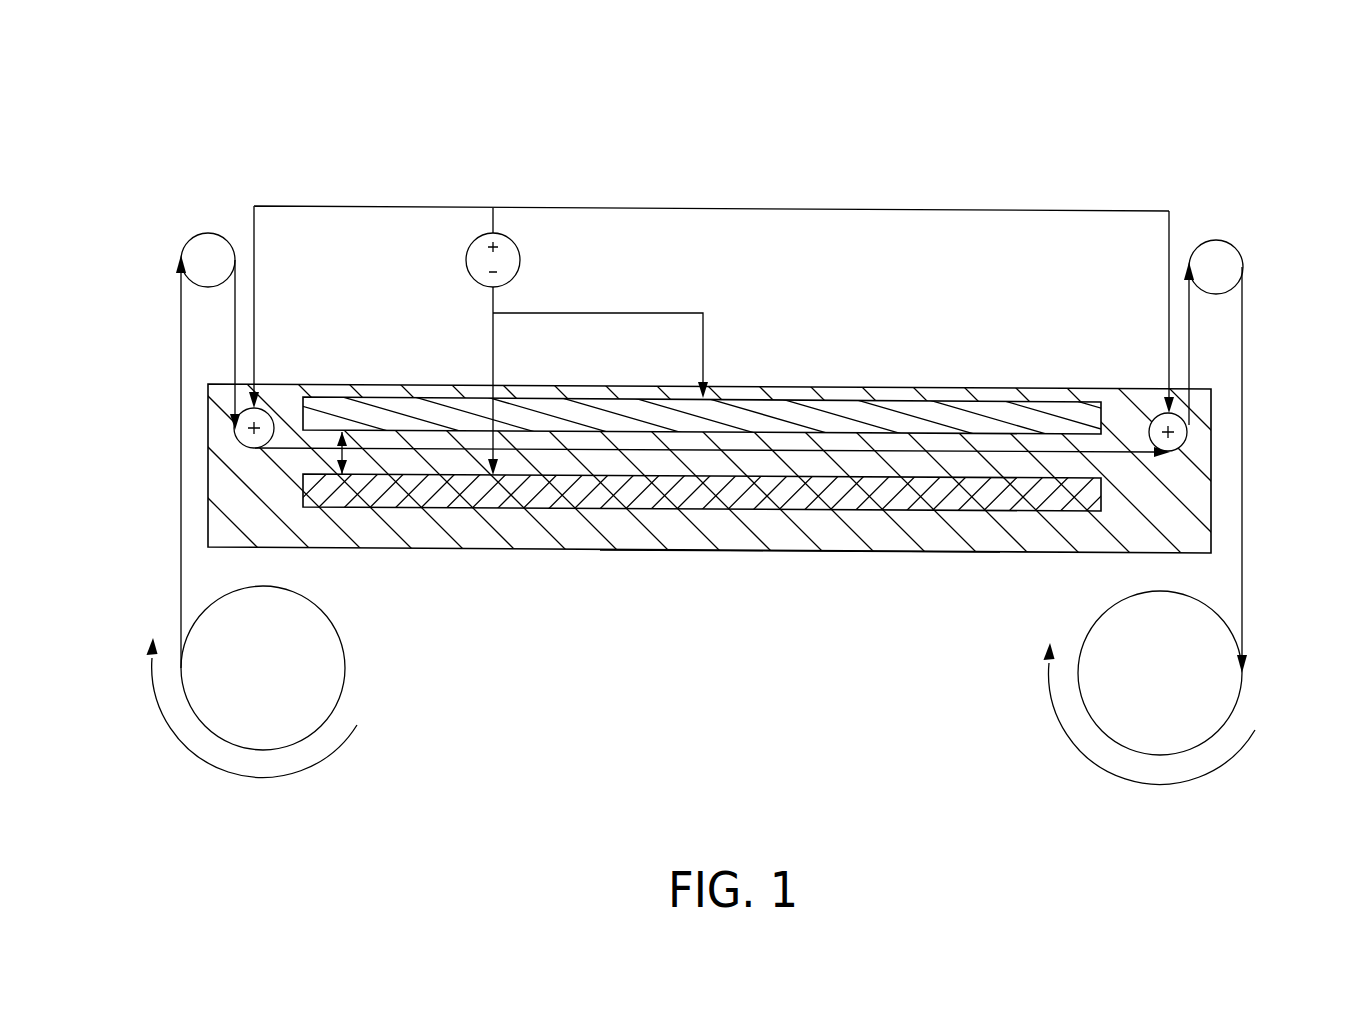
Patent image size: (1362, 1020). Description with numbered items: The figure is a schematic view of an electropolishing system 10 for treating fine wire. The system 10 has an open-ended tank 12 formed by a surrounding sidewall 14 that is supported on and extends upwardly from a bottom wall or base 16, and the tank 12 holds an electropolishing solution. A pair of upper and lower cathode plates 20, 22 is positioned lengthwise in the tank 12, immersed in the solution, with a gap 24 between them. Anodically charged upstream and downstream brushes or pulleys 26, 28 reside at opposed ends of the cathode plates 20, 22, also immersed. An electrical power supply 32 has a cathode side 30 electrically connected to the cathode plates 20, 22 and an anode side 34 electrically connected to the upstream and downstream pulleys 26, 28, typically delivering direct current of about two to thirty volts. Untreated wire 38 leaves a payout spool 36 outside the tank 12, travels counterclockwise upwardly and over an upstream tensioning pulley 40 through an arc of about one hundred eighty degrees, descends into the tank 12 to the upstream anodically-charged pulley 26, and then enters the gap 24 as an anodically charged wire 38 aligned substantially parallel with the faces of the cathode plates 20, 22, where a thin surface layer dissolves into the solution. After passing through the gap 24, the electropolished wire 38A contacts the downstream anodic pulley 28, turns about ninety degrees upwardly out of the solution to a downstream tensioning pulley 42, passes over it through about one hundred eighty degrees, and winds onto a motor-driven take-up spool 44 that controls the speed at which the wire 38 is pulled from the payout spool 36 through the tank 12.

The electropolishing system 10 is at (1128, 132).
The tank 12 is at (1262, 398).
The sidewall 14 is at (1213, 538).
The base 16 is at (785, 553).
The upper cathode plate 20 is at (905, 413).
The lower cathode plate 22 is at (683, 495).
The gap 24 is at (338, 455).
The upstream anodically-charged pulley 26 is at (234, 428).
The downstream anodically-charged pulley 28 is at (1163, 410).
The cathode side 30 is at (493, 298).
The electrical power supply 32 is at (478, 262).
The anode side 34 is at (493, 222).
The payout spool 36 is at (193, 677).
The untreated wire 38 is at (181, 580).
The electropolished wire 38A is at (1188, 313).
The upstream tensioning pulley 40 is at (181, 262).
The downstream tensioning pulley 42 is at (1233, 267).
The take-up spool 44 is at (1210, 685).